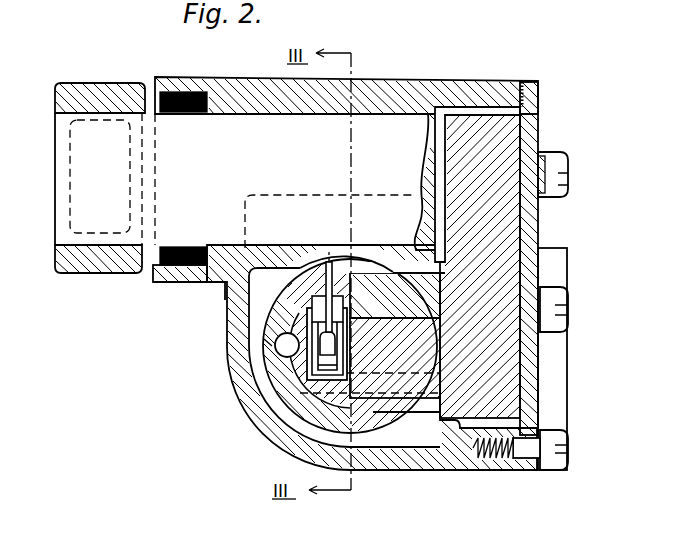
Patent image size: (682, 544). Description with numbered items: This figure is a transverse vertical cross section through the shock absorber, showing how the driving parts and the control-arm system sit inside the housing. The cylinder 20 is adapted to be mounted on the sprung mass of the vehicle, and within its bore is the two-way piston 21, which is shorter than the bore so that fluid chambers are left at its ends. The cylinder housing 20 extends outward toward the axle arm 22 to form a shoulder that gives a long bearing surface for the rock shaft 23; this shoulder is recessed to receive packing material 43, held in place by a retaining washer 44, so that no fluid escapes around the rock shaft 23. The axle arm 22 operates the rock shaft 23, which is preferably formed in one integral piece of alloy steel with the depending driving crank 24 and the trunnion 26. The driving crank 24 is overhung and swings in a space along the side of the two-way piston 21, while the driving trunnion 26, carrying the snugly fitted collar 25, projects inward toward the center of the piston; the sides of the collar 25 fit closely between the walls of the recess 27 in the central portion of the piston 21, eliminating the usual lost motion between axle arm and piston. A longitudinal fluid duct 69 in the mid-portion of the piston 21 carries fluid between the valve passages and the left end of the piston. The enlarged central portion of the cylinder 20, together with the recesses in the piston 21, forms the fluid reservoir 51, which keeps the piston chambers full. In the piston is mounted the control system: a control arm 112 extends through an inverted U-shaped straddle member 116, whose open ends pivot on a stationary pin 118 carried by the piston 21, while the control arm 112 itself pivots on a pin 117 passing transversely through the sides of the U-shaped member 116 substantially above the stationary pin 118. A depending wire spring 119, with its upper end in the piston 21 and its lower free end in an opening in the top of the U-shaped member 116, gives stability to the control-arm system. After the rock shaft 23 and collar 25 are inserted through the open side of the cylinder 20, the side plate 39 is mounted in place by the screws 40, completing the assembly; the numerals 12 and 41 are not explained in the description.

The flange 12 is at (152, 283).
The cylinder 20 is at (378, 92).
The two-way piston 21 is at (280, 390).
The axle arm 22 is at (98, 92).
The rock shaft 23 is at (222, 128).
The driving crank 24 is at (537, 384).
The collar 25 is at (400, 437).
The trunnion 26 is at (373, 397).
The recess 27 is at (372, 270).
The side plate 39 is at (535, 130).
The screws 40 is at (570, 187).
The gasket 41 is at (523, 87).
The packing material 43 is at (184, 267).
The retaining washer 44 is at (198, 276).
The fluid reservoir 51 is at (455, 105).
The fluid duct 69 is at (266, 340).
The control arm 112 is at (338, 338).
The inverted U-shaped straddle member 116 is at (308, 334).
The pin 117 is at (335, 351).
The stationary pin 118 is at (337, 366).
The wire spring 119 is at (328, 262).